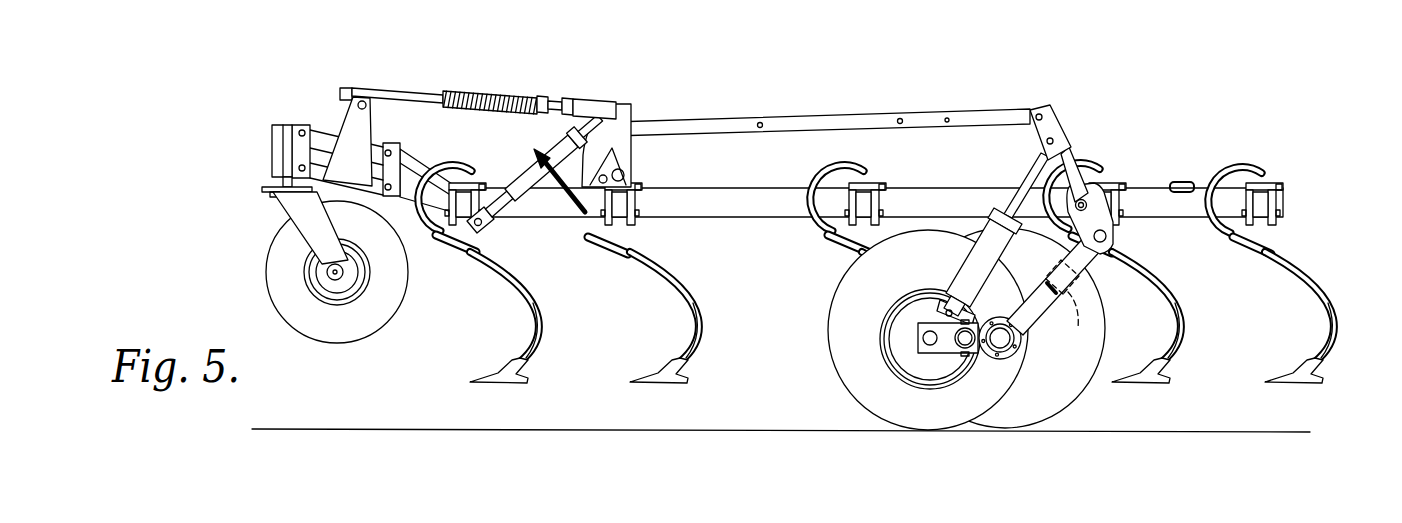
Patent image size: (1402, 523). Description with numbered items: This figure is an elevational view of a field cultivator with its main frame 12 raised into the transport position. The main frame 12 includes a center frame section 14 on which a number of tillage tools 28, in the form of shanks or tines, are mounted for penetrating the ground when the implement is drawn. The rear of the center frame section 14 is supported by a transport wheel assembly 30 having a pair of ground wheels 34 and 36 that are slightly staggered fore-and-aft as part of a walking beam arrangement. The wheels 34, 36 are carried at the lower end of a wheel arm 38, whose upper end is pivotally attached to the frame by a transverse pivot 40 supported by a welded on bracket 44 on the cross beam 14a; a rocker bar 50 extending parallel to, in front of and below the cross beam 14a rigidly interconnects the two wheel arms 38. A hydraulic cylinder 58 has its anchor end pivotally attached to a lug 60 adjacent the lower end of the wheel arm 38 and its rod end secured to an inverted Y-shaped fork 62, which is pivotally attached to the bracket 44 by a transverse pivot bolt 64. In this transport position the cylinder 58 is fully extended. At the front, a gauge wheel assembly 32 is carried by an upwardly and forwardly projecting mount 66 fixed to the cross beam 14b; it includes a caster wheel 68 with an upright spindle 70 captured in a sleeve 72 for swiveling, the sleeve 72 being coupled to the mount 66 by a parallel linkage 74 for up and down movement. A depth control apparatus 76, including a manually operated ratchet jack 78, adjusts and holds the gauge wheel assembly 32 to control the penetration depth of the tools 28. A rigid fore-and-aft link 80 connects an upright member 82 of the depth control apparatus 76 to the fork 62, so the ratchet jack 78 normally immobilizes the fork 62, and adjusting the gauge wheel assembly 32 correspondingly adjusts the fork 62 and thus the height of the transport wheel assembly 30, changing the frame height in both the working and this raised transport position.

The main frame 12 is at (1218, 170).
The center frame section 14 is at (733, 194).
The cross beam 14a is at (1107, 188).
The cross beam 14b is at (462, 208).
The tillage tools 28 is at (548, 330).
The transport wheel assembly 30 is at (939, 343).
The gauge wheel assembly 32 is at (288, 112).
The ground wheel 34 is at (1060, 405).
The ground wheel 36 is at (843, 302).
The wheel arm 38 is at (1087, 260).
The transverse pivot 40 is at (1108, 237).
The welded on bracket 44 is at (1088, 188).
The rocker bar 50 is at (1067, 306).
The hydraulic cylinder 58 is at (987, 243).
The lug 60 is at (957, 318).
The fork 62 is at (1047, 120).
The pivot bolt 64 is at (1076, 202).
The mount 66 is at (410, 166).
The caster wheel 68 is at (275, 263).
The spindle 70 is at (275, 126).
The sleeve 72 is at (272, 183).
The parallel linkage 74 is at (325, 128).
The depth control apparatus 76 is at (508, 82).
The ratchet jack 78 is at (537, 170).
The link 80 is at (840, 120).
The upright member 82 is at (625, 148).